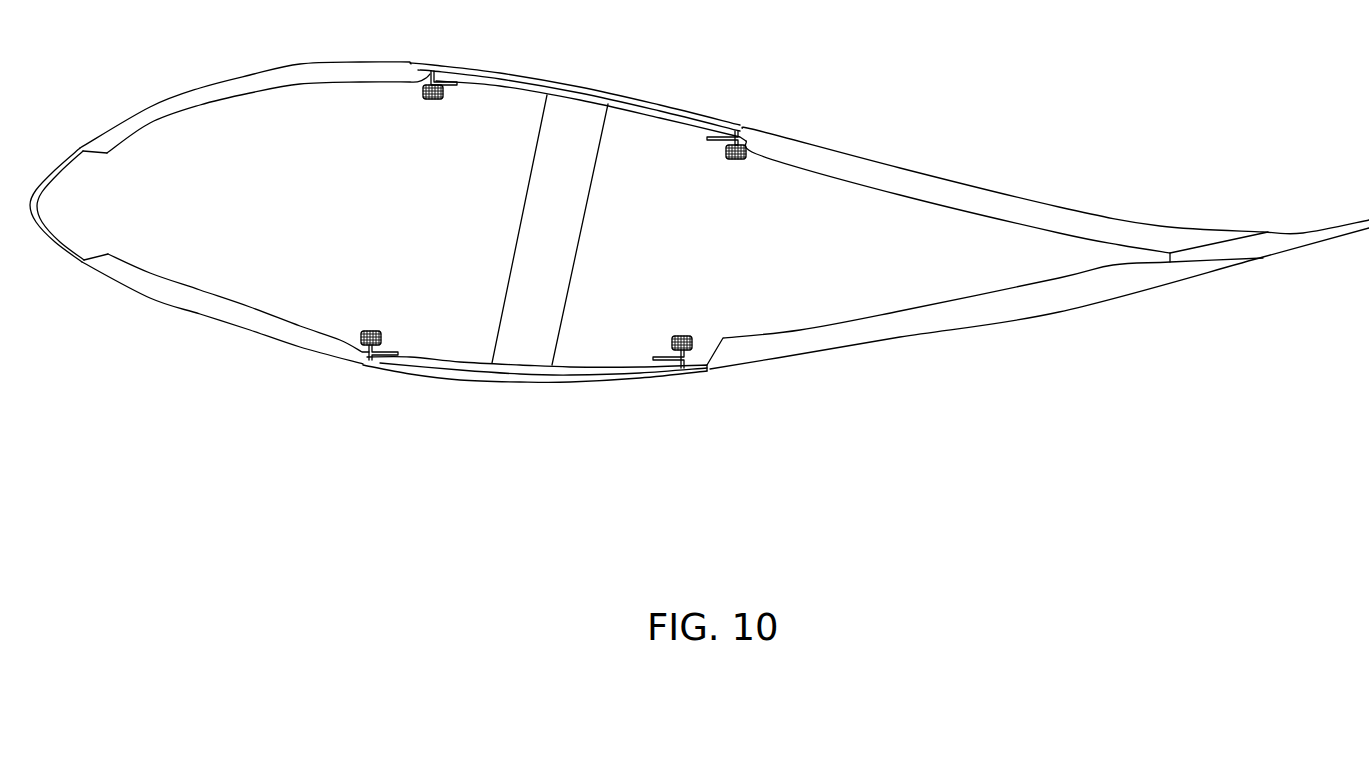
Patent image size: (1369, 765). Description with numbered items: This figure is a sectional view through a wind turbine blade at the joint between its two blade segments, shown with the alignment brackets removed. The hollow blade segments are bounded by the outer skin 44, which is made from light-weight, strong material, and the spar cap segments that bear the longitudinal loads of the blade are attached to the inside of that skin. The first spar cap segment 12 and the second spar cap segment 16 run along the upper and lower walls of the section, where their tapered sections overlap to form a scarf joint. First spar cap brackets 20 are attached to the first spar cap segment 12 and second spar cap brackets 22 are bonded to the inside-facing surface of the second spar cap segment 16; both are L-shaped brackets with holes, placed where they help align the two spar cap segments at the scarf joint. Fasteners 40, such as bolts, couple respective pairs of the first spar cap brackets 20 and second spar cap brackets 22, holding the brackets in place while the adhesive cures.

The first spar cap segment 12 is at (616, 93).
The second spar cap segment 16 is at (507, 84).
The first spar cap brackets 20 is at (363, 370).
The second spar cap brackets 22 is at (393, 352).
The fasteners 40 is at (423, 103).
The outer skin 44 is at (897, 168).